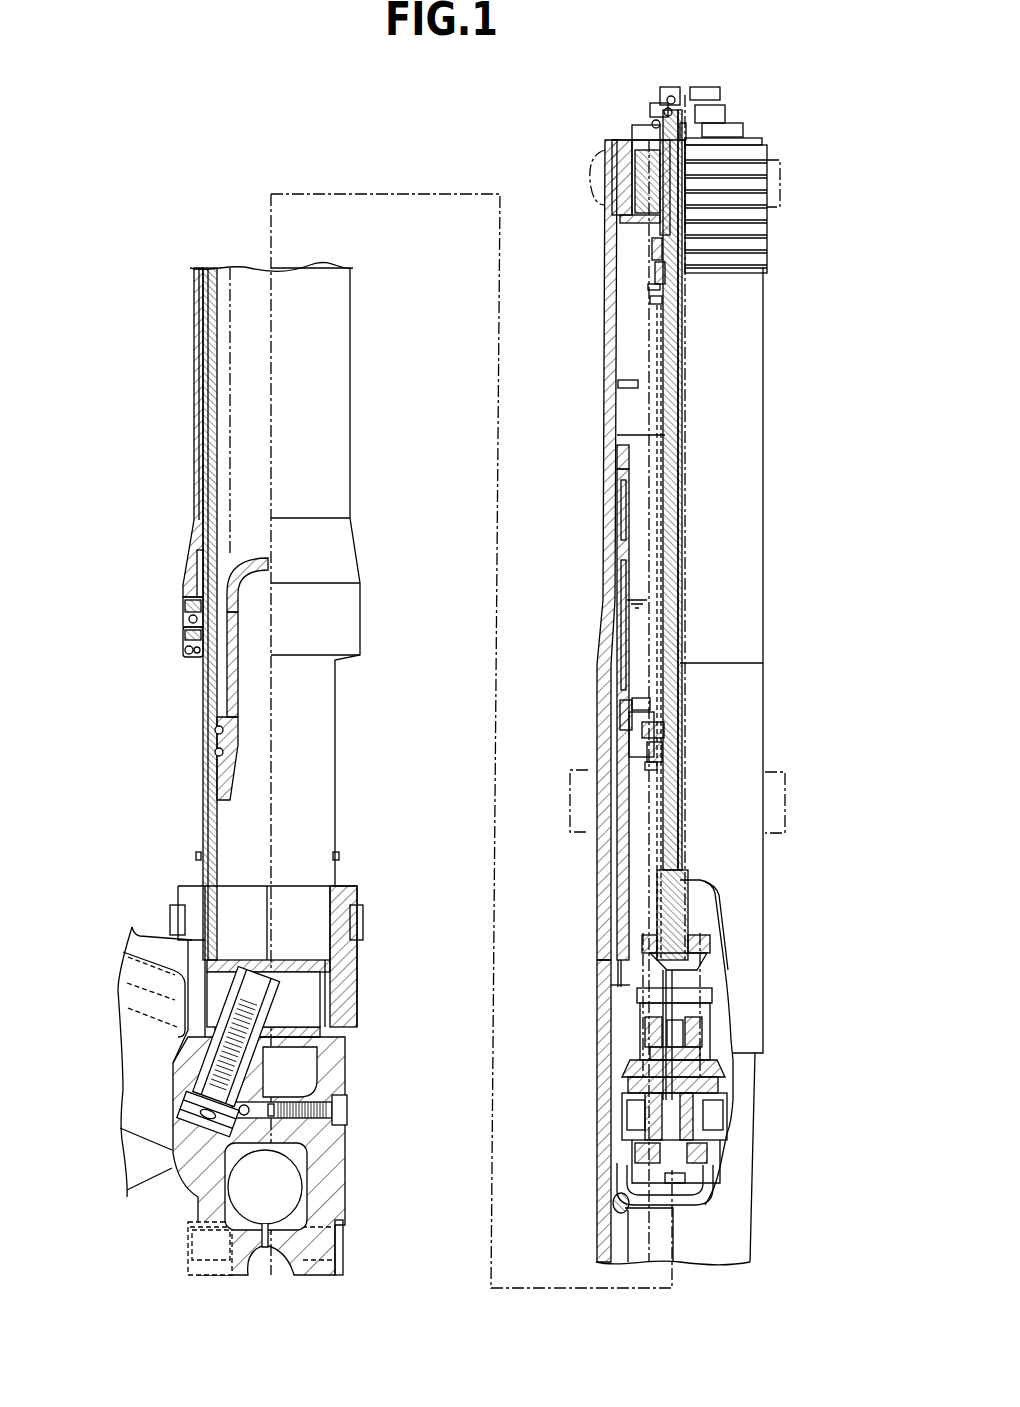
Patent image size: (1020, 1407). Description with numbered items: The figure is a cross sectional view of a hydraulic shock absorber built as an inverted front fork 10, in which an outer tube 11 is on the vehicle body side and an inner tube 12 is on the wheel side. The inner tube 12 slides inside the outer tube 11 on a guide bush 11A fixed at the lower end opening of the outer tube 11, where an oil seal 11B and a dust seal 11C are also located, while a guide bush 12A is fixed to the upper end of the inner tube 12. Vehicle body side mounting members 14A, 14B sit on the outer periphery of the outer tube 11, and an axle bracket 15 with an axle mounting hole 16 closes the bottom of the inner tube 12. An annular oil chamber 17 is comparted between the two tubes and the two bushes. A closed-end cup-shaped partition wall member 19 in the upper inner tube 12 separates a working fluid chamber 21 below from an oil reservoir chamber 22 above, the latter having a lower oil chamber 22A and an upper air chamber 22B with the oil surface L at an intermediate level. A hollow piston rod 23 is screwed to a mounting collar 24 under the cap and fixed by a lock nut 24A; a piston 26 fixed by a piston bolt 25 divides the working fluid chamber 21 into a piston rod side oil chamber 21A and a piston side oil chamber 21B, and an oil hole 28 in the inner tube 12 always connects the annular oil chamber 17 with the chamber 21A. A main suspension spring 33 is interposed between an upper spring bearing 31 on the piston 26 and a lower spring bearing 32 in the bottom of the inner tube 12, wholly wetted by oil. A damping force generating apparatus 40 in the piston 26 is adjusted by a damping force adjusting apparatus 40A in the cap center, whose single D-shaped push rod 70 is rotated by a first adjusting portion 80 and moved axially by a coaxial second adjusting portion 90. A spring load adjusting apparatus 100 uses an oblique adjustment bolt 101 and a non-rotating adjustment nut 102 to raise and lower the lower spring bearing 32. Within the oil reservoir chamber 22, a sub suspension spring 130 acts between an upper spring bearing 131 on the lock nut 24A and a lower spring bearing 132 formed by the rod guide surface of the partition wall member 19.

The front fork 10 is at (190, 150).
The outer tube 11 is at (605, 158).
The guide bush 11A is at (198, 578).
The oil seal 11B is at (190, 613).
The dust seal 11C is at (186, 650).
The inner tube 12 is at (207, 713).
The guide bush 12A is at (636, 530).
The vehicle body side mounting member 14A is at (785, 170).
The vehicle body side mounting member 14B is at (786, 788).
The axle bracket 15 is at (132, 938).
The axle mounting hole 16 is at (282, 1210).
The annular oil chamber 17 is at (610, 860).
The partition wall member 19 is at (680, 474).
The working fluid chamber 21 is at (625, 900).
The piston rod side oil chamber 21A is at (628, 995).
The piston side oil chamber 21B is at (655, 1248).
The oil reservoir chamber 22 is at (640, 495).
The oil chamber 22A is at (627, 636).
The air chamber 22B is at (636, 372).
The piston rod 23 is at (660, 352).
The mounting collar 24 is at (650, 248).
The lock nut 24A is at (653, 266).
The piston bolt 25 is at (703, 1013).
The piston 26 is at (730, 1108).
The oil hole 28 is at (617, 745).
The upper spring bearing 31 is at (600, 1197).
The lower spring bearing 32 is at (215, 768).
The main suspension spring 33 is at (198, 333).
The damping force generating apparatus 40 is at (724, 1145).
The damping force adjusting apparatus 40A is at (712, 975).
The push rod 70 is at (640, 398).
The first adjusting portion 80 is at (655, 118).
The second adjusting portion 90 is at (668, 88).
The spring load adjusting apparatus 100 is at (203, 1064).
The adjustment bolt 101 is at (195, 1088).
The adjustment nut 102 is at (290, 993).
The sub suspension spring 130 is at (655, 300).
The upper spring bearing 131 is at (650, 287).
The lower spring bearing 132 is at (640, 693).
The oil surface L is at (637, 600).